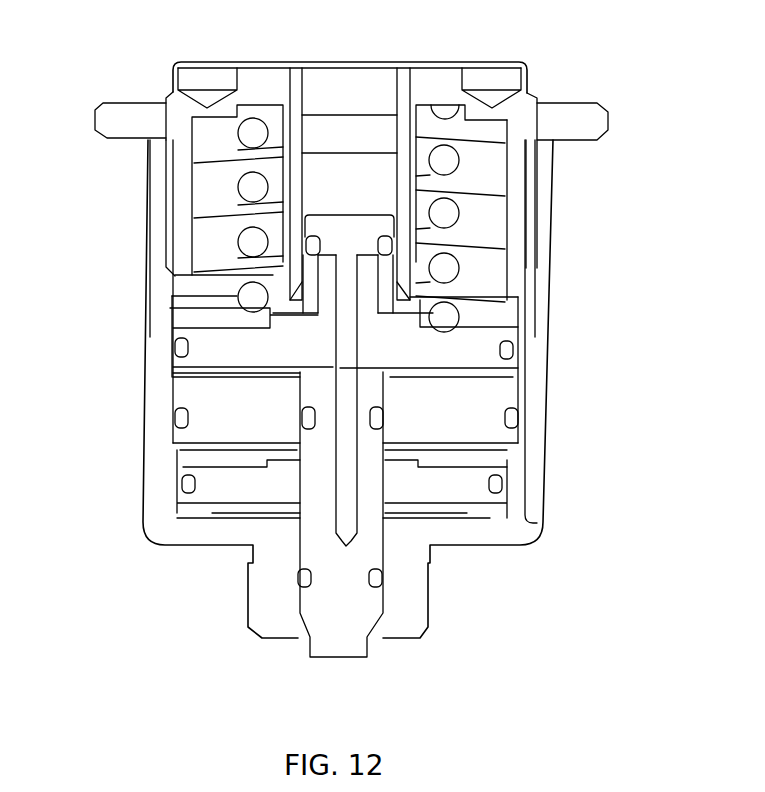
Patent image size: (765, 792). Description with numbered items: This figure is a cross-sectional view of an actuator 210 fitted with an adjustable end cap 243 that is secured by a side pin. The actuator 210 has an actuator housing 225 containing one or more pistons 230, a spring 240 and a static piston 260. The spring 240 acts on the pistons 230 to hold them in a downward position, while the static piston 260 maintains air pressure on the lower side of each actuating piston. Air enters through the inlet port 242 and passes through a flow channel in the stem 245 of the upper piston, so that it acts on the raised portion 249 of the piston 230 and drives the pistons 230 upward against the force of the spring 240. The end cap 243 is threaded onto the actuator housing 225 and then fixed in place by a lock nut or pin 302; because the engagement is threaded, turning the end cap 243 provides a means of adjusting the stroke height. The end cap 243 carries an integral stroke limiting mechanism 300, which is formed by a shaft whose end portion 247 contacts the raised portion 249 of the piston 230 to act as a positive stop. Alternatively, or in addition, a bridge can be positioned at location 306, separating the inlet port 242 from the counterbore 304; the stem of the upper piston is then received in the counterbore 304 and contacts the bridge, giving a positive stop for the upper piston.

The actuator 210 is at (118, 319).
The actuator housing 225 is at (154, 448).
The piston 230 is at (487, 345).
The spring 240 is at (253, 240).
The inlet port 242 is at (367, 90).
The end cap 243 is at (525, 104).
The stem 245 is at (370, 272).
The end portion 247 is at (410, 297).
The raised portion 249 is at (487, 378).
The static piston 260 is at (500, 438).
The stroke limiting mechanism 300 is at (375, 148).
The lock nut or pin 302 is at (592, 118).
The counterbore 304 is at (323, 183).
The bridge position 306 is at (452, 215).